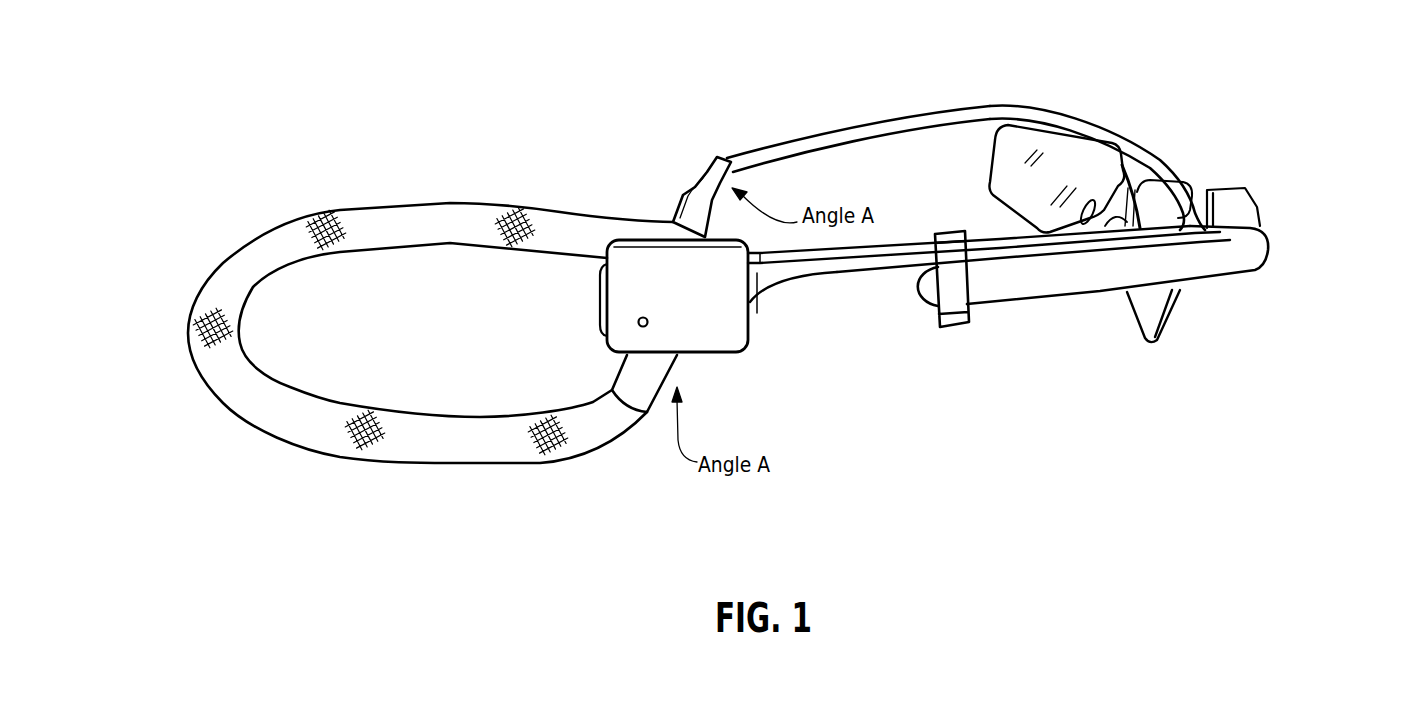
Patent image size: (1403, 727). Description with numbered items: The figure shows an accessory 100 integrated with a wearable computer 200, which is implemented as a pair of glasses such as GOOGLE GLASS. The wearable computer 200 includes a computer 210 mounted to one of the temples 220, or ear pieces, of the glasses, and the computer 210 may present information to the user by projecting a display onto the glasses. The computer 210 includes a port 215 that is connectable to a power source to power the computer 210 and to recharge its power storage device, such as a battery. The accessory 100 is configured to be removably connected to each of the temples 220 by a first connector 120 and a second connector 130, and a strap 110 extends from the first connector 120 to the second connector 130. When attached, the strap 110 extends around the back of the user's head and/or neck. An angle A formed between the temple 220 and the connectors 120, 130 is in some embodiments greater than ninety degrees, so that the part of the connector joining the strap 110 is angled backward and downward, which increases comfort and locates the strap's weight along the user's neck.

The accessory 100 is at (303, 150).
The strap 110 is at (233, 417).
The first connector 120 is at (715, 156).
The second connector 130 is at (683, 362).
The wearable computer 200 is at (1137, 90).
The computer 210 is at (1277, 238).
The port 215 is at (980, 310).
The temples 220 is at (857, 122).